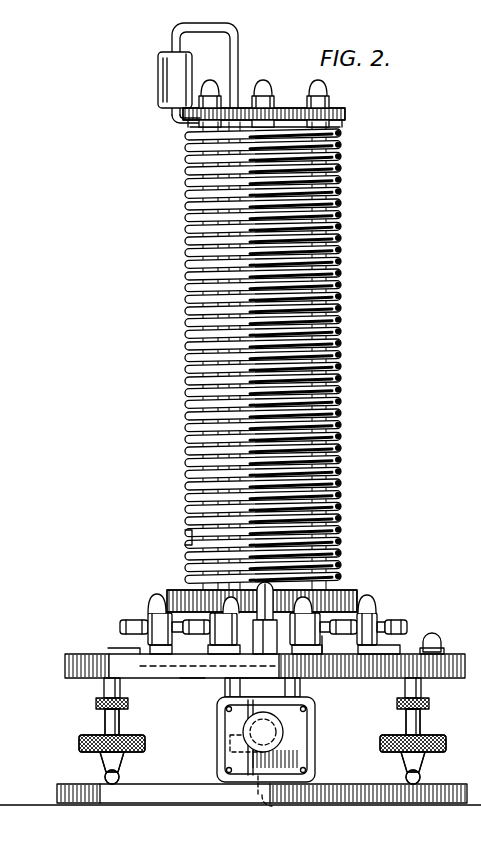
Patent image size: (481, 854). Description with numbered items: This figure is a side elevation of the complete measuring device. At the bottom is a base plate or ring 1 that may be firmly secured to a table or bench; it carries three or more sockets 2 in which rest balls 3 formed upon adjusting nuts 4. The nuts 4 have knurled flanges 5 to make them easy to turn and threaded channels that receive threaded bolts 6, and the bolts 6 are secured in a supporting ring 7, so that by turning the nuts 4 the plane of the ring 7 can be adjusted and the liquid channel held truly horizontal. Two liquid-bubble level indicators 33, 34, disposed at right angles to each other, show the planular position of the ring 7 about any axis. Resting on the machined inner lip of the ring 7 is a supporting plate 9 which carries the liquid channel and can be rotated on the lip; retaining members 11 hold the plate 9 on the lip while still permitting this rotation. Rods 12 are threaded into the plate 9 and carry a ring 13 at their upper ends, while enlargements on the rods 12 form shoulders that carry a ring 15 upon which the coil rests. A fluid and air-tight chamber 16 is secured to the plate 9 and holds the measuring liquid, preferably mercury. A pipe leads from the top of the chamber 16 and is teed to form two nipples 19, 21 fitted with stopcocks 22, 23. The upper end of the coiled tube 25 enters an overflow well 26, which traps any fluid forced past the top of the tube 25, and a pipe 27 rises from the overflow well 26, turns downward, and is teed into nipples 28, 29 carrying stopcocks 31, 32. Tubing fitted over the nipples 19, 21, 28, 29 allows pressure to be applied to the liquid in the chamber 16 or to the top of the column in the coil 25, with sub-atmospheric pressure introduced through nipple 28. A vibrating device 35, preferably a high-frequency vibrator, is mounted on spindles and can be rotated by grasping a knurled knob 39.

The base plate or ring 1 is at (70, 784).
The sockets 2 is at (120, 785).
The balls 3 is at (104, 780).
The adjusting nuts 4 is at (104, 721).
The knurled flanges 5 is at (79, 743).
The bolts 6 is at (104, 690).
The supporting ring 7 is at (95, 654).
The supporting plate 9 is at (193, 679).
The retaining members 11 is at (132, 643).
The rods 12 is at (180, 127).
The ring 13 is at (345, 111).
The ring 15 is at (374, 600).
The fluid and air-tight chamber 16 is at (186, 536).
The nipple 19 is at (398, 636).
The nipple 21 is at (324, 640).
The stopcock 22 is at (378, 610).
The stopcock 23 is at (340, 595).
The tube or coil 25 is at (346, 322).
The overflow well 26 is at (158, 72).
The pipe 27 is at (236, 27).
The nipple 28 is at (140, 620).
The nipple 29 is at (195, 625).
The stopcock 31 is at (157, 594).
The stopcock 32 is at (208, 600).
The level indicator 33 is at (442, 647).
The level indicator 34 is at (308, 678).
The vibrating device 35 is at (316, 722).
The knurled knob 39 is at (284, 746).